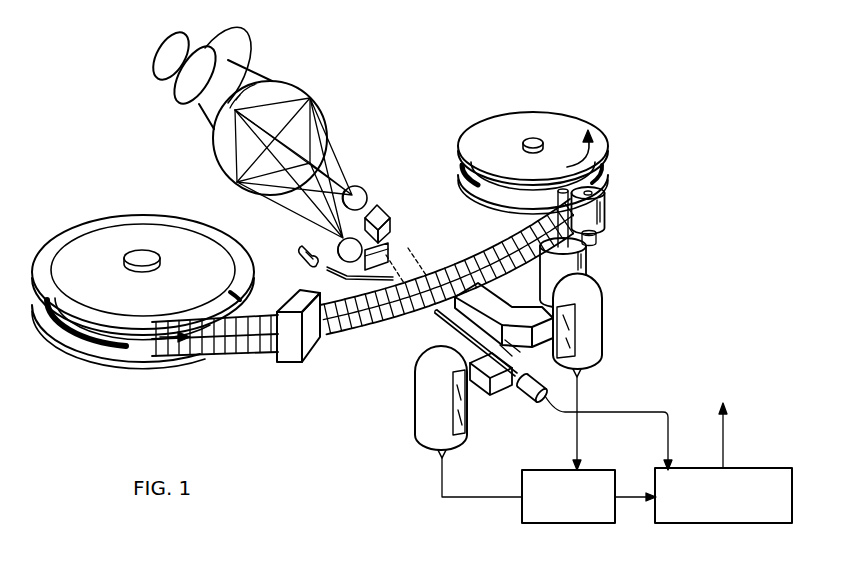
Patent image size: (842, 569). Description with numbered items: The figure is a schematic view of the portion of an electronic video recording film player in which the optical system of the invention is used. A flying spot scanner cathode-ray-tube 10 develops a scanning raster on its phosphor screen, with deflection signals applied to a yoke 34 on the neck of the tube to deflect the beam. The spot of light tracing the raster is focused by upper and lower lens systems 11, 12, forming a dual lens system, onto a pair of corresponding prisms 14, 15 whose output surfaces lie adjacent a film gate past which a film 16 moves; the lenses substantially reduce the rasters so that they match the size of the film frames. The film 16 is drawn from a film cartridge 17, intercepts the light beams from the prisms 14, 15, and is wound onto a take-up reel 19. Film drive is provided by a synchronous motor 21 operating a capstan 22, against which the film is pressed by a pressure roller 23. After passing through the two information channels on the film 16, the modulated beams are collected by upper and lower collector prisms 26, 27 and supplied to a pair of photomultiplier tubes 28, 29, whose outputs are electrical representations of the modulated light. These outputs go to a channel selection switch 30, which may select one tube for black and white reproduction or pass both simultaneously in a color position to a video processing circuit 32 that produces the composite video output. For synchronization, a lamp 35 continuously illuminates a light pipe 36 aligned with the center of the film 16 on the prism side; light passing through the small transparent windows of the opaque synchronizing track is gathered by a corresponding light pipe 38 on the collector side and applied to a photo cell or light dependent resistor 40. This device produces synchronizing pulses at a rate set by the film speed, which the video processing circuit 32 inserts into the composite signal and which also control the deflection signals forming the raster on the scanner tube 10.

The flying spot scanner cathode-ray-tube 10 is at (208, 133).
The yoke 34 is at (218, 62).
The upper lens system 11 is at (362, 189).
The lower lens system 12 is at (337, 243).
The upper prism 14 is at (384, 208).
The lower prism 15 is at (390, 250).
The lamp 35 is at (304, 263).
The light pipe 36 is at (414, 262).
The film cartridge 17 is at (113, 218).
The film 16 is at (245, 356).
The take-up reel 19 is at (546, 115).
The pressure roller 23 is at (606, 205).
The capstan 22 is at (597, 242).
The synchronous motor 21 is at (589, 266).
The photomultiplier tube 28 is at (603, 310).
The upper collector prism 26 is at (490, 296).
The light pipe 38 is at (448, 319).
The lower collector prism 27 is at (510, 386).
The photomultiplier tube 29 is at (417, 394).
The photo cell or light dependent resistor 40 is at (538, 398).
The channel selection switch 30 is at (524, 524).
The video processing circuit 32 is at (767, 524).